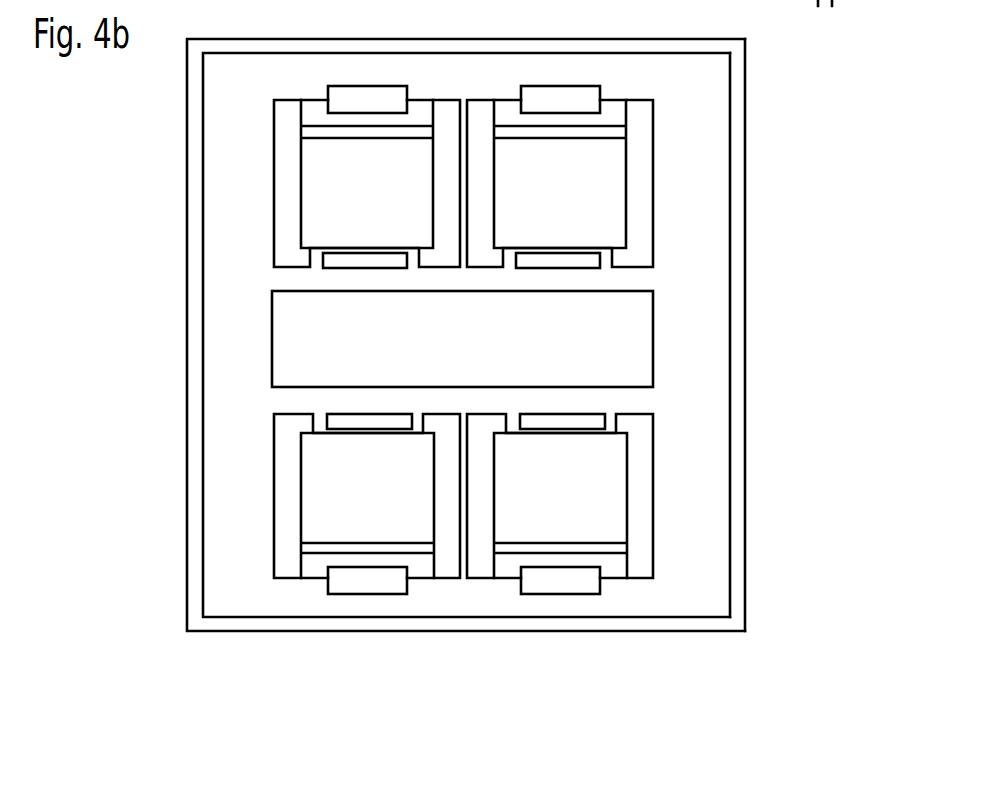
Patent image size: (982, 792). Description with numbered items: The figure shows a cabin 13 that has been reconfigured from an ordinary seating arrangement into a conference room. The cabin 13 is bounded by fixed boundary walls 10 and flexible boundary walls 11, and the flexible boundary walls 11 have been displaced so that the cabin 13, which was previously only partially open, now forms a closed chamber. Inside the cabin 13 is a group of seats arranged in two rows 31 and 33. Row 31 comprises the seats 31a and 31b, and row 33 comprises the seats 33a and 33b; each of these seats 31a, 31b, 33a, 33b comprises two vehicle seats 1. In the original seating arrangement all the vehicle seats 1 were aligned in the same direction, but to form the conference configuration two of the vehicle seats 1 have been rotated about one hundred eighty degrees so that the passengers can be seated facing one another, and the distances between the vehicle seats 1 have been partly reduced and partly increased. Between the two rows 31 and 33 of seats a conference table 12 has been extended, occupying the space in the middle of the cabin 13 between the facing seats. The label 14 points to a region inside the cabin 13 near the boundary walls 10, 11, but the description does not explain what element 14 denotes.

The vehicle seat 1 is at (445, 340).
The fixed boundary wall 10 is at (452, 348).
The flexible boundary wall 11 is at (437, 0).
The conference table 12 is at (612, 357).
The cabin 13 is at (765, 243).
The housing interior 14 is at (223, 308).
The row of seats 31 is at (288, 504).
The seat 31a is at (310, 524).
The seat 31b is at (590, 495).
The row of seats 33 is at (270, 194).
The seat 33a is at (318, 230).
The seat 33b is at (610, 229).